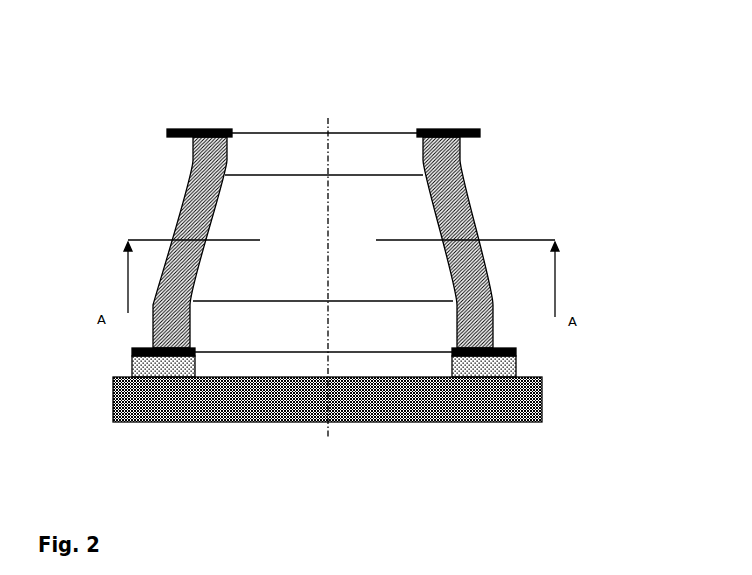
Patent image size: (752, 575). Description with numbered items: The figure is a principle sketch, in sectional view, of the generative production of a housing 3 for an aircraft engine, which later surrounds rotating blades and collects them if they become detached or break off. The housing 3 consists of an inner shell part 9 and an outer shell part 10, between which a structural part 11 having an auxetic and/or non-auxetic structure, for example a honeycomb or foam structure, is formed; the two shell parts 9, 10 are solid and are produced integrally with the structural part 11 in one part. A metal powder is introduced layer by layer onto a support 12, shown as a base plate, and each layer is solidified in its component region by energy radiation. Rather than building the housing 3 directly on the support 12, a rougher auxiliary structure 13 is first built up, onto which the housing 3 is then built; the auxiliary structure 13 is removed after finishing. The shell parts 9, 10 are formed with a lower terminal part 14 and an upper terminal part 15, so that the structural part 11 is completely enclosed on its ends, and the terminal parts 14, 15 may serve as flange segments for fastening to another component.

The housing 3 is at (472, 178).
The inner shell part 9 is at (210, 130).
The outer shell part 10 is at (447, 130).
The structural part 11 is at (418, 180).
The support 12 is at (166, 428).
The auxiliary structure 13 is at (283, 422).
The lower terminal part 14 is at (132, 352).
The upper terminal part 15 is at (167, 130).